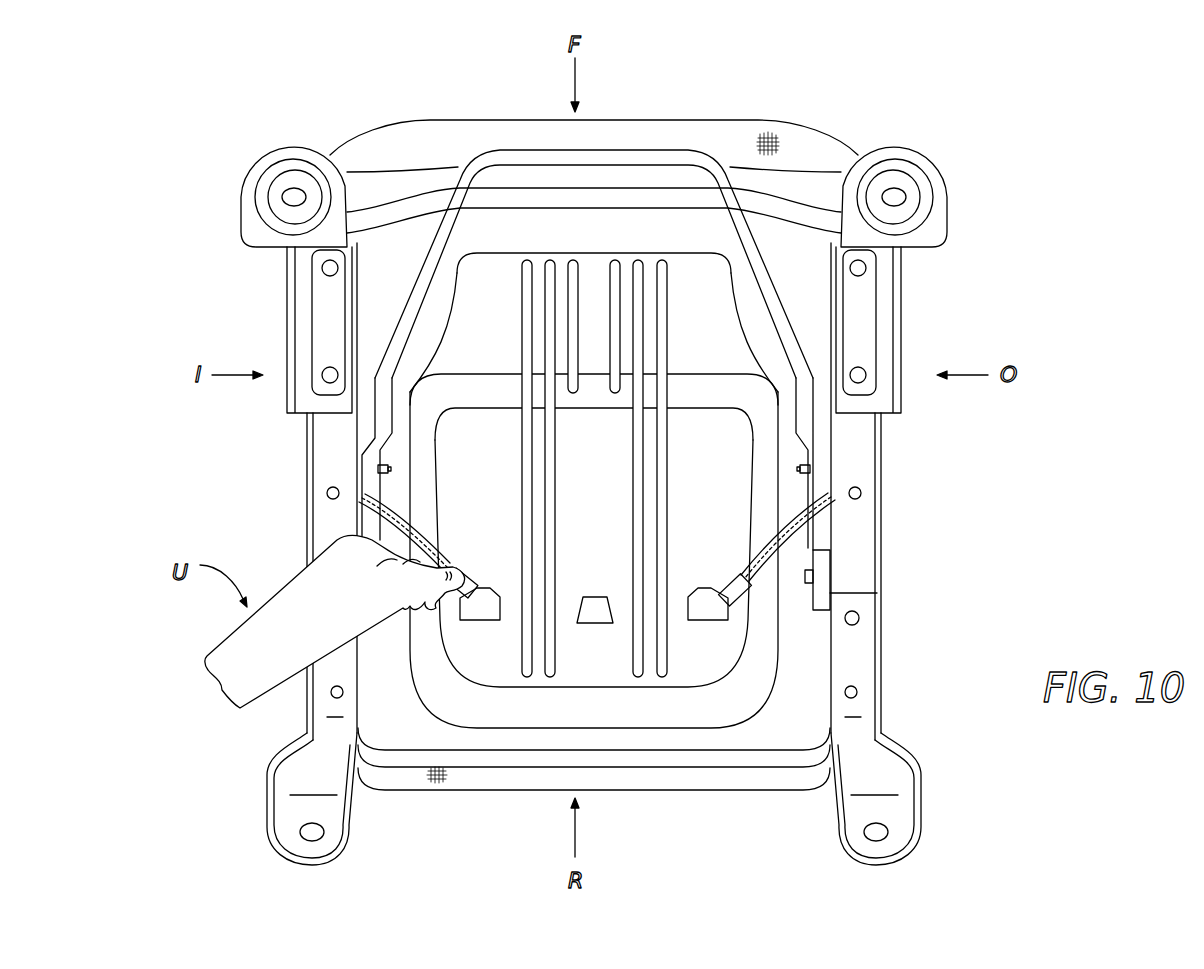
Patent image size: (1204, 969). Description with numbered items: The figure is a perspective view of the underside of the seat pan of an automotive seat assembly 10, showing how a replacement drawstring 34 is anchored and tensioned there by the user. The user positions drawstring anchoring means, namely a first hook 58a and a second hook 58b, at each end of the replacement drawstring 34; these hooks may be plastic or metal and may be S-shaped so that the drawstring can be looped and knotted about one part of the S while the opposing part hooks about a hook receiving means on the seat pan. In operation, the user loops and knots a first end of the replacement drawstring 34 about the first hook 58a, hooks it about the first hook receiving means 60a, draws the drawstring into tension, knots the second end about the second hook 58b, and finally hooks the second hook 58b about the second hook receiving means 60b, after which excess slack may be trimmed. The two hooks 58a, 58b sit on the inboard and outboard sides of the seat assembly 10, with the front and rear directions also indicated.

The automotive seat assembly 10 is at (440, 82).
The replacement drawstring 34 is at (400, 545).
The first hook 58a is at (470, 618).
The second hook 58b is at (712, 610).
The first hook receiving means 60a is at (445, 604).
The second hook receiving means 60b is at (778, 608).